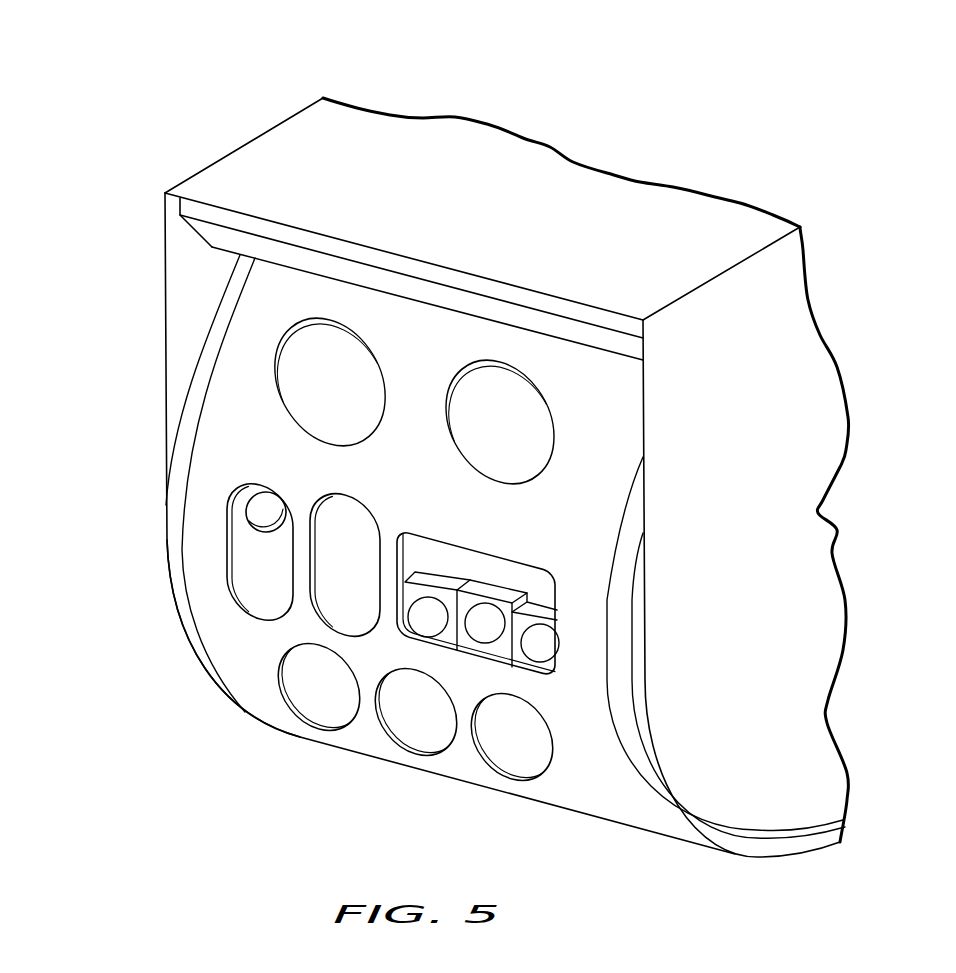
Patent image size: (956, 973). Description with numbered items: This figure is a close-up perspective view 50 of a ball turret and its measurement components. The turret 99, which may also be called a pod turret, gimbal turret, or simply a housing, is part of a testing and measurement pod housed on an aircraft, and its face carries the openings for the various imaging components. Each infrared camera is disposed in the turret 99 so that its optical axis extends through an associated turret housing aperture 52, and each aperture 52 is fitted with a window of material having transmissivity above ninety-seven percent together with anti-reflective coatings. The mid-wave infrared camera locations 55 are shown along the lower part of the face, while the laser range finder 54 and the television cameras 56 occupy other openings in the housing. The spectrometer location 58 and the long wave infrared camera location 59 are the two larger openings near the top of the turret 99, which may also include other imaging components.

The ball turret and measurement components view 50 is at (116, 202).
The turret housing aperture 52 is at (360, 543).
The laser range finder 54 is at (267, 521).
The mid-wave infrared camera locations 55 is at (318, 706).
The television cameras 56 is at (430, 603).
The spectrometer location 58 is at (507, 377).
The long wave infrared camera location 59 is at (336, 331).
The turret 99 is at (238, 730).